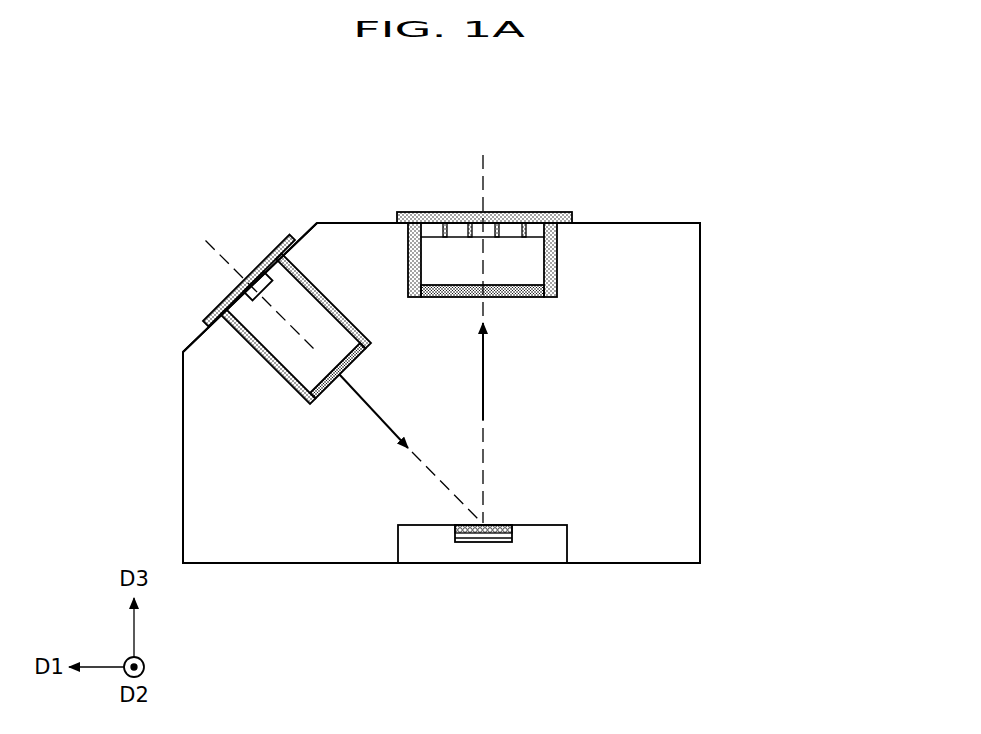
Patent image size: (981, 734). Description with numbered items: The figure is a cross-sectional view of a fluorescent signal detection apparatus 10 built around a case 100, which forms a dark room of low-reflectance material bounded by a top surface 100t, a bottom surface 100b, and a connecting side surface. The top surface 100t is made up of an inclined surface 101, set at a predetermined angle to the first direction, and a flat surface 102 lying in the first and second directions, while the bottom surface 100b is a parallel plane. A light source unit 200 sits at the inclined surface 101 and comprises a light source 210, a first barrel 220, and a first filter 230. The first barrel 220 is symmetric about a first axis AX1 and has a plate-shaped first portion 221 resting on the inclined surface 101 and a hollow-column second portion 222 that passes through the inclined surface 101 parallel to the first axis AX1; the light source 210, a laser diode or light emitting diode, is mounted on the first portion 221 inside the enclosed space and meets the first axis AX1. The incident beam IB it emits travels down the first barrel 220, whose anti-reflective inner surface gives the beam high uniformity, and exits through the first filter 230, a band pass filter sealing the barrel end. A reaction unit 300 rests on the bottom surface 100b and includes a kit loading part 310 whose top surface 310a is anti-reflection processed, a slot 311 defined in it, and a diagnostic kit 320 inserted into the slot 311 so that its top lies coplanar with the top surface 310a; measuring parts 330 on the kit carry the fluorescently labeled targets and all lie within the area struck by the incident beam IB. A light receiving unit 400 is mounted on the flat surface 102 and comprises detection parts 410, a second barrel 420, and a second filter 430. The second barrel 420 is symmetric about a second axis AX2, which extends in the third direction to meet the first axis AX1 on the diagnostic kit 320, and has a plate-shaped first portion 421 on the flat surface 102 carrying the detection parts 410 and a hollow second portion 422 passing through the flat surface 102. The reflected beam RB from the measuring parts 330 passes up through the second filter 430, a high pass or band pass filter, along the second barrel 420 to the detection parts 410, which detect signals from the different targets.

The fluorescent signal detection apparatus 10 is at (683, 86).
The case 100 is at (703, 395).
The top surface 100t is at (441, 232).
The inclined surface 101 is at (297, 238).
The flat surface 102 is at (508, 187).
The bottom surface 100b is at (690, 564).
The light source unit 200 is at (258, 376).
The light source 210 is at (241, 283).
The first barrel 220 is at (210, 320).
The first portion 221 is at (204, 318).
The second portion 222 is at (236, 343).
The first filter 230 is at (327, 389).
The first axis AX1 is at (235, 250).
The second axis AX2 is at (481, 180).
The incident beam IB is at (376, 410).
The reflected beam RB is at (487, 367).
The reaction unit 300 is at (574, 434).
The kit loading part 310 is at (547, 534).
The top surface of kit loading part 310a is at (522, 523).
The slot 311 is at (468, 542).
The diagnostic kit 320 is at (507, 546).
The measuring parts 330 is at (476, 542).
The light receiving unit 400 is at (553, 190).
The detection parts 410 is at (510, 227).
The second barrel 420 is at (554, 260).
The first portion 421 is at (573, 223).
The second portion 422 is at (552, 263).
The second filter 430 is at (543, 291).